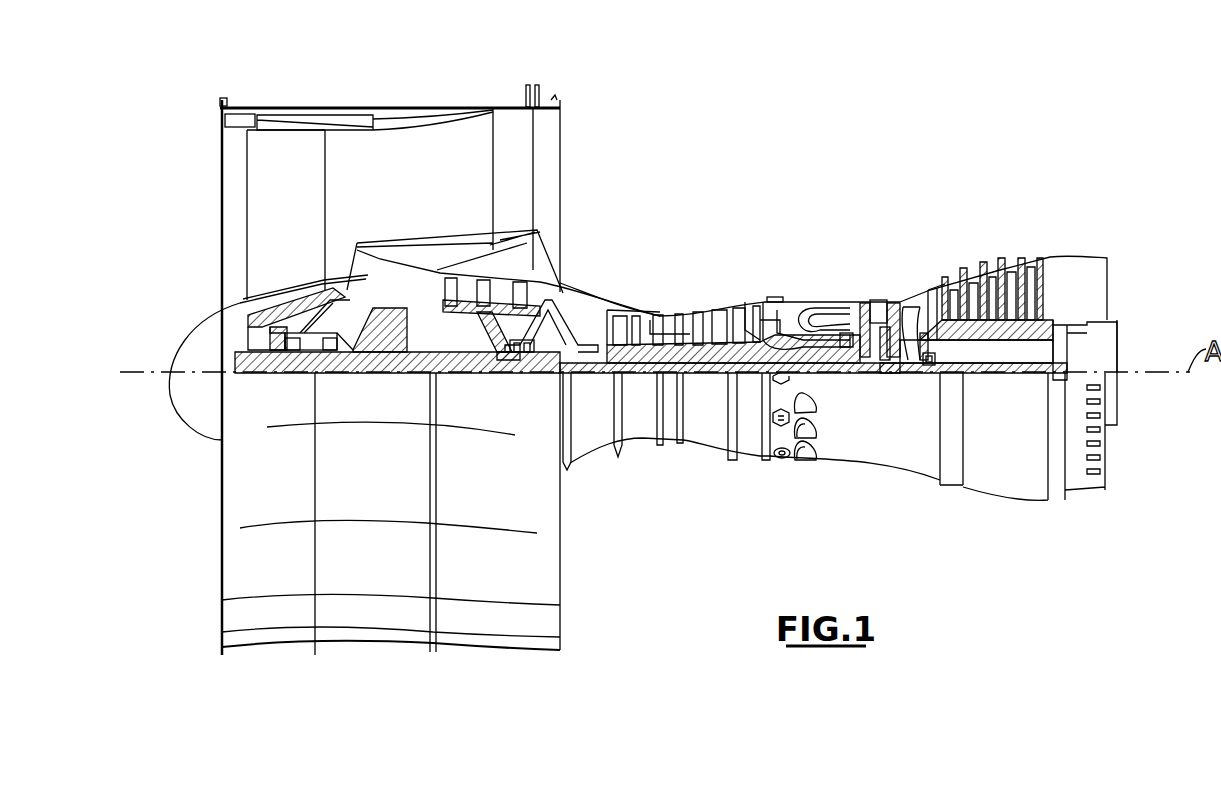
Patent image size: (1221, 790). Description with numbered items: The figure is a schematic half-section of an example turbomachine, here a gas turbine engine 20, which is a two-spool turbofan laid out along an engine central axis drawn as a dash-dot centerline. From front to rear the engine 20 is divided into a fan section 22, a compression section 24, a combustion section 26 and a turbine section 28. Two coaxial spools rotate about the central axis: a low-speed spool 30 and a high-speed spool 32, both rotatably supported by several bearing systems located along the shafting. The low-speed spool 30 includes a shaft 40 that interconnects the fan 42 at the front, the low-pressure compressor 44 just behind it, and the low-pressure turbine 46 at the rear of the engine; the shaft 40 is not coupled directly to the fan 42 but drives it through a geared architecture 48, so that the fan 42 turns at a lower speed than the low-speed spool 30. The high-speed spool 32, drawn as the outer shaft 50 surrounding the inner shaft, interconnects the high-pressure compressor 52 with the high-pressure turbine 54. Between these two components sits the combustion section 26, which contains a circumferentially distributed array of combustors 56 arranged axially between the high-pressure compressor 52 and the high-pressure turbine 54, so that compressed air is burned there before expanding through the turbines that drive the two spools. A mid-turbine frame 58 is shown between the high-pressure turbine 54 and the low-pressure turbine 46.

The gas turbine engine 20 is at (828, 150).
The fan section 22 is at (333, 88).
The compression section 24 is at (603, 288).
The combustion section 26 is at (812, 273).
The turbine section 28 is at (986, 234).
The low-speed spool 30 is at (709, 377).
The high-speed spool 32 is at (753, 320).
The shaft 40 is at (577, 374).
The fan 42 is at (270, 209).
The low-pressure compressor 44 is at (500, 283).
The low-pressure turbine 46 is at (999, 275).
The geared architecture 48 is at (398, 375).
The shaft 50 is at (830, 366).
The high-pressure compressor 52 is at (683, 333).
The high-pressure turbine 54 is at (887, 300).
The combustors 56 is at (818, 317).
The mid-turbine frame 58 is at (920, 293).